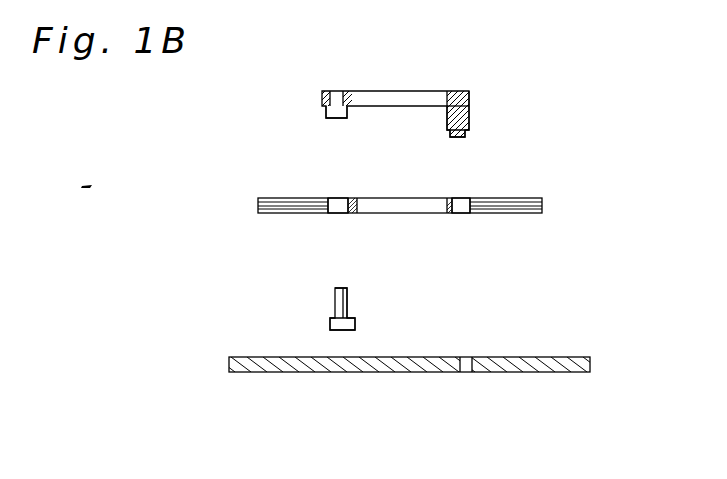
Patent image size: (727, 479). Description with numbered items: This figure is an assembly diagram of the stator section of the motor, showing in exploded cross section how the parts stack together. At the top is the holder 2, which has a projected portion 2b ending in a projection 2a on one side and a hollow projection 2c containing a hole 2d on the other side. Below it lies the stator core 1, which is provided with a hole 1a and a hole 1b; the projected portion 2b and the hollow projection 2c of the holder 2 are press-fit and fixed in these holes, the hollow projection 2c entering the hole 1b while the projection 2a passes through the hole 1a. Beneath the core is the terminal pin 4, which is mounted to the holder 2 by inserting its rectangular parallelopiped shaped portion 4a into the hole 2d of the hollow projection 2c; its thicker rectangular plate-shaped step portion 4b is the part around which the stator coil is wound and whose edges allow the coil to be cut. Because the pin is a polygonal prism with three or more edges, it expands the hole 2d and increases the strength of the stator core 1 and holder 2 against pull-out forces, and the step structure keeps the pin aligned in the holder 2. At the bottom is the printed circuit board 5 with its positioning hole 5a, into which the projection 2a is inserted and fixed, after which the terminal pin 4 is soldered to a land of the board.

The stator core 1 is at (517, 199).
The hole of stator core 1a is at (462, 206).
The hole of stator core 1b is at (340, 212).
The holder 2 is at (468, 93).
The projection 2a is at (453, 137).
The projected portion 2b is at (470, 115).
The hollow projection 2c is at (325, 115).
The hole of hollow projection 2d is at (337, 92).
The terminal pin 4 is at (335, 318).
The rectangular parallelopiped shaped portion 4a is at (350, 302).
The rectangular plate-shaped step portion 4b is at (352, 328).
The printed circuit board 5 is at (573, 359).
The positioning hole 5a is at (465, 372).